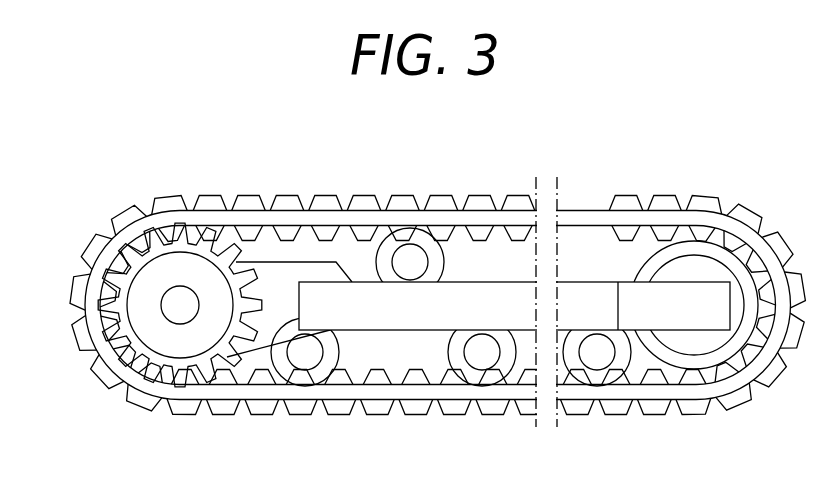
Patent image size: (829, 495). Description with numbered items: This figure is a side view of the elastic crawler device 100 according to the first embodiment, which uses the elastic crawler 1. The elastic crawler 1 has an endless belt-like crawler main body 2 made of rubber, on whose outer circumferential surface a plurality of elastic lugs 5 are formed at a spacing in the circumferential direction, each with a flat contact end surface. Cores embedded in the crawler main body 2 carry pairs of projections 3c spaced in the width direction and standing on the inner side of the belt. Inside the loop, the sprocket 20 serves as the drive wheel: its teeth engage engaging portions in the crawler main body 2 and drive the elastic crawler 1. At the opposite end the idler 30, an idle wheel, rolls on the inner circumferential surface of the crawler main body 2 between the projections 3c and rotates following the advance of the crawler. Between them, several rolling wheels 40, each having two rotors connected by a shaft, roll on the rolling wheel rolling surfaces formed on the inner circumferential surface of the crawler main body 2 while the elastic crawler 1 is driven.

The elastic crawler device 100 is at (409, 285).
The elastic crawler 1 is at (88, 273).
The crawler main body 2 is at (342, 218).
The lug 5 is at (92, 247).
The projection 3c is at (274, 238).
The sprocket 20 is at (178, 340).
The idler 30 is at (702, 260).
The rolling wheel 40 is at (435, 262).